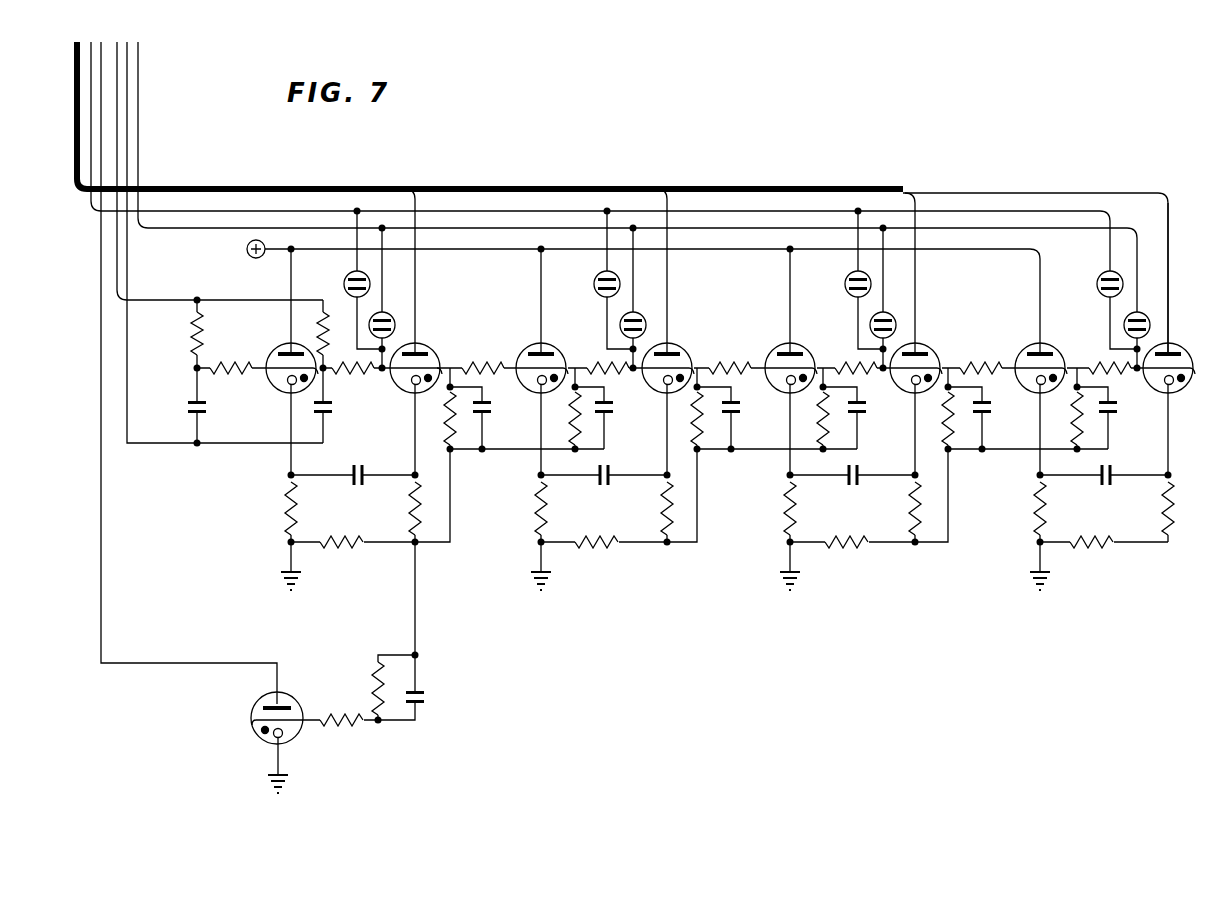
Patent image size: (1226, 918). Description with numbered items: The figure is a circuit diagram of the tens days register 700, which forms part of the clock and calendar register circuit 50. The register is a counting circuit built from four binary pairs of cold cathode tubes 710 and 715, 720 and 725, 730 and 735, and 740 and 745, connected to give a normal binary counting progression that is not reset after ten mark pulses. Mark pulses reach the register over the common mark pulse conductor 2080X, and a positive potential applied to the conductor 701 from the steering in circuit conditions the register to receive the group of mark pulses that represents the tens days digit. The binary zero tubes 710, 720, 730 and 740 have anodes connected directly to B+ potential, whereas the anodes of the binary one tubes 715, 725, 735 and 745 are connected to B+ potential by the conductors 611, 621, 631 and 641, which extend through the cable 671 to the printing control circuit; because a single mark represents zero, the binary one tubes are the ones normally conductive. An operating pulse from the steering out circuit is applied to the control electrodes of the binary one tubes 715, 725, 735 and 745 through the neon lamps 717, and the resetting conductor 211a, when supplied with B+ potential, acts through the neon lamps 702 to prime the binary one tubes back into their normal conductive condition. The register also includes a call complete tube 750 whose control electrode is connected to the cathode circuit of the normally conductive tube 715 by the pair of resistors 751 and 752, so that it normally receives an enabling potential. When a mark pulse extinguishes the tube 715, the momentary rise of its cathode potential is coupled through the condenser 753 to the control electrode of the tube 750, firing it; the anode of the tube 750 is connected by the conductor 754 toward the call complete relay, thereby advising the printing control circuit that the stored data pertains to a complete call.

The clock and calendar register circuit 50 is at (1147, 755).
The tens days register 700 is at (645, 572).
The cable 671 is at (540, 185).
The resetting conductor 211a is at (212, 211).
The conductor 754 is at (101, 545).
The conductor 701 is at (137, 299).
The common mark pulse conductor 2080X is at (150, 443).
The neon lamps 702 is at (345, 276).
The neon lamps 717 is at (395, 314).
The conductor 611 is at (415, 283).
The conductor 621 is at (667, 283).
The conductor 631 is at (915, 283).
The conductor 641 is at (1168, 283).
The binary zero tube 710 is at (272, 339).
The binary one tube 715 is at (422, 346).
The binary zero tube 720 is at (585, 338).
The binary one tube 725 is at (679, 346).
The binary zero tube 730 is at (843, 338).
The binary one tube 735 is at (936, 346).
The binary zero tube 740 is at (1090, 338).
The binary one tube 745 is at (1184, 346).
The call complete tube 750 is at (262, 696).
The resistor 751 is at (348, 727).
The resistor 752 is at (372, 688).
The condenser 753 is at (419, 702).